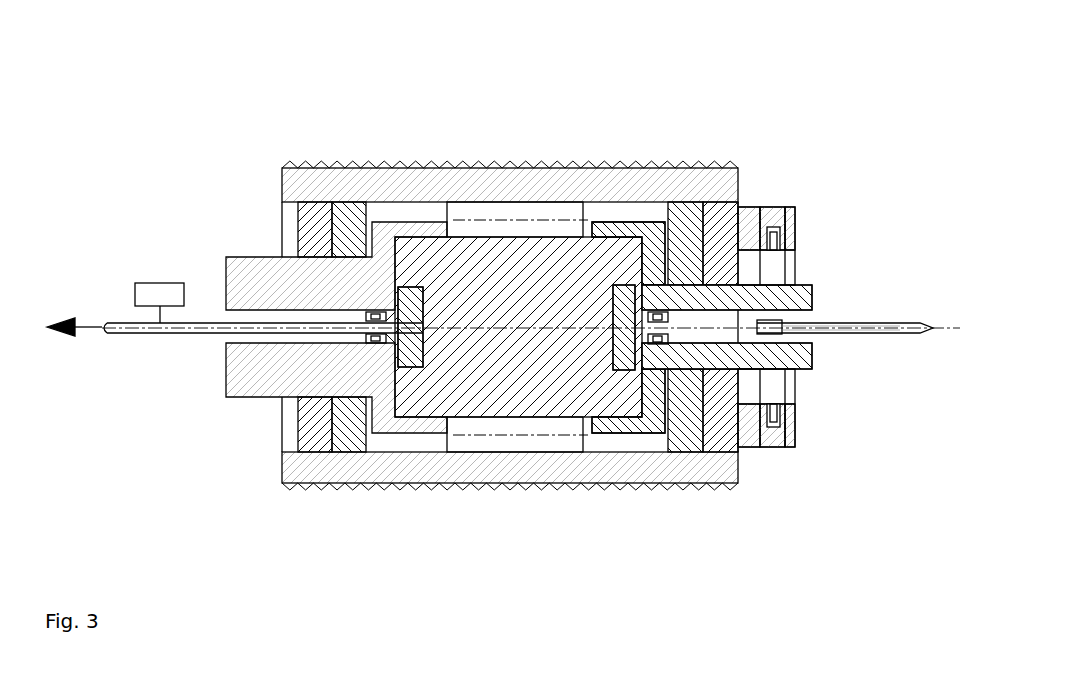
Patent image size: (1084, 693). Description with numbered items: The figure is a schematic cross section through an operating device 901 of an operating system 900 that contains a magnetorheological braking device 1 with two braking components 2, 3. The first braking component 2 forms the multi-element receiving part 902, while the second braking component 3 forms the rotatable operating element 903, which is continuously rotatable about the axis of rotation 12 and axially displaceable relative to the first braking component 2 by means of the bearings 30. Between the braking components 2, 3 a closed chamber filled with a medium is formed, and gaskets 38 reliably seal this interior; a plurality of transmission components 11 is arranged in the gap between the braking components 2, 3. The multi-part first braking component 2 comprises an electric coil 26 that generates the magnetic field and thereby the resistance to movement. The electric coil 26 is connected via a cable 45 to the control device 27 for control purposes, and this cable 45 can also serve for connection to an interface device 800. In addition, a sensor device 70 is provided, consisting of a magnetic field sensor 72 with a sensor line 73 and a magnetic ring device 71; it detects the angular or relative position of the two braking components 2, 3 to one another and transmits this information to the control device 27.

The magnetorheological braking device 1 is at (178, 160).
The first braking component 2 is at (245, 417).
The second braking component 3 is at (510, 292).
The transmission component 11 is at (553, 213).
The axis of rotation 12 is at (945, 332).
The electric coil 26 is at (408, 297).
The control device 27 is at (153, 293).
The bearing 30 is at (312, 220).
The gasket 38 is at (352, 415).
The cable 45 is at (237, 333).
The sensor device 70 is at (887, 228).
The magnetic ring device 71 is at (803, 227).
The magnetic field sensor 72 is at (768, 322).
The sensor line 73 is at (885, 330).
The interface device 800 is at (84, 331).
The operating system 900 is at (790, 80).
The operating device 901 is at (822, 157).
The multi-element receiving part 902 is at (552, 353).
The rotatable operating element 903 is at (492, 152).